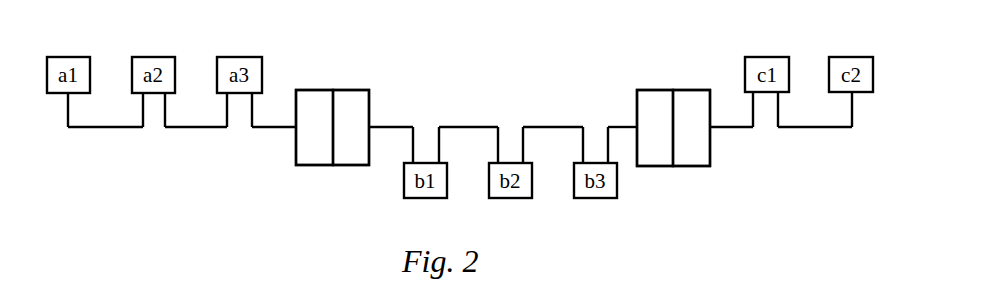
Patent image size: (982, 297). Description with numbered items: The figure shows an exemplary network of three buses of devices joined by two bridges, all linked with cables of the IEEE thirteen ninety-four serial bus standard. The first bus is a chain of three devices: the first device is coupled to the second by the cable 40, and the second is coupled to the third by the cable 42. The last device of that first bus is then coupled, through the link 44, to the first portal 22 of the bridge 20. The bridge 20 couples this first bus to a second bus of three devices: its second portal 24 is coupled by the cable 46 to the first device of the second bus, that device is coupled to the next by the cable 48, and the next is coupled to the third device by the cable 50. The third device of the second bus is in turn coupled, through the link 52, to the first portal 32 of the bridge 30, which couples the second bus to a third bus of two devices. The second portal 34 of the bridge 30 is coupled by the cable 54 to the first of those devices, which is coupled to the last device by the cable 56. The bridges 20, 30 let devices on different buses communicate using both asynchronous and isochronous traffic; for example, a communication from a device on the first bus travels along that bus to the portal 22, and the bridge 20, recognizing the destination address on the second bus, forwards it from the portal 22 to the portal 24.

The bridge 20 is at (337, 72).
The first portal 22 is at (312, 167).
The second portal 24 is at (355, 167).
The bridge 30 is at (655, 78).
The first portal 32 is at (648, 167).
The second portal 34 is at (690, 167).
The IEEE Std 1394-1995 cable 40 is at (102, 128).
The IEEE Std 1394-1995 cable 42 is at (198, 128).
The bus segment between a3 and first switching device 44 is at (287, 128).
The IEEE Std 1394-1995 cable 46 is at (390, 127).
The IEEE Std 1394-1995 cable 48 is at (472, 127).
The IEEE Std 1394-1995 cable 50 is at (553, 127).
The bus segment between b3 and second switching device 52 is at (612, 127).
The IEEE Std 1394-1995 cable 54 is at (733, 128).
The IEEE Std 1394-1995 cable 56 is at (827, 128).